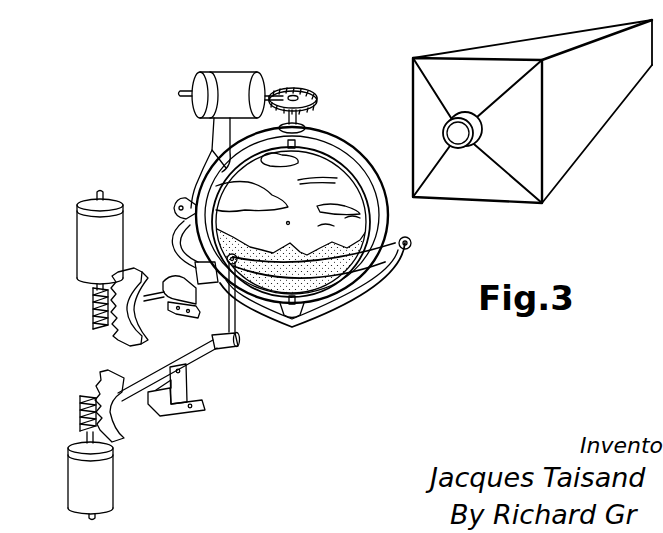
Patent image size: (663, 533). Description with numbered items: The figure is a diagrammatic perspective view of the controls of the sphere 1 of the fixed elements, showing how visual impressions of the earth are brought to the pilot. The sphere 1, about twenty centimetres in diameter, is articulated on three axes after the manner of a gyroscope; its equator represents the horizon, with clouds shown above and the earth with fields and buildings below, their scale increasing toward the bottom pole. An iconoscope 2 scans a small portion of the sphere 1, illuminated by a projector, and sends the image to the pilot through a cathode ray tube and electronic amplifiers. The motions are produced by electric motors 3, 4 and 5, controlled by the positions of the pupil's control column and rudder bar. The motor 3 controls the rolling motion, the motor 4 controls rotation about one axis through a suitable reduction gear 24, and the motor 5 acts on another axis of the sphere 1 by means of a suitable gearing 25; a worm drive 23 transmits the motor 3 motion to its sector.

The sphere 1 is at (340, 283).
The iconoscope 2 is at (538, 183).
The electric motor 3 is at (90, 206).
The electric motor 4 is at (108, 486).
The electric motor 5 is at (247, 84).
The worm and sector gear 23 is at (91, 312).
The reduction gear 24 is at (108, 414).
The gearing 25 is at (305, 100).